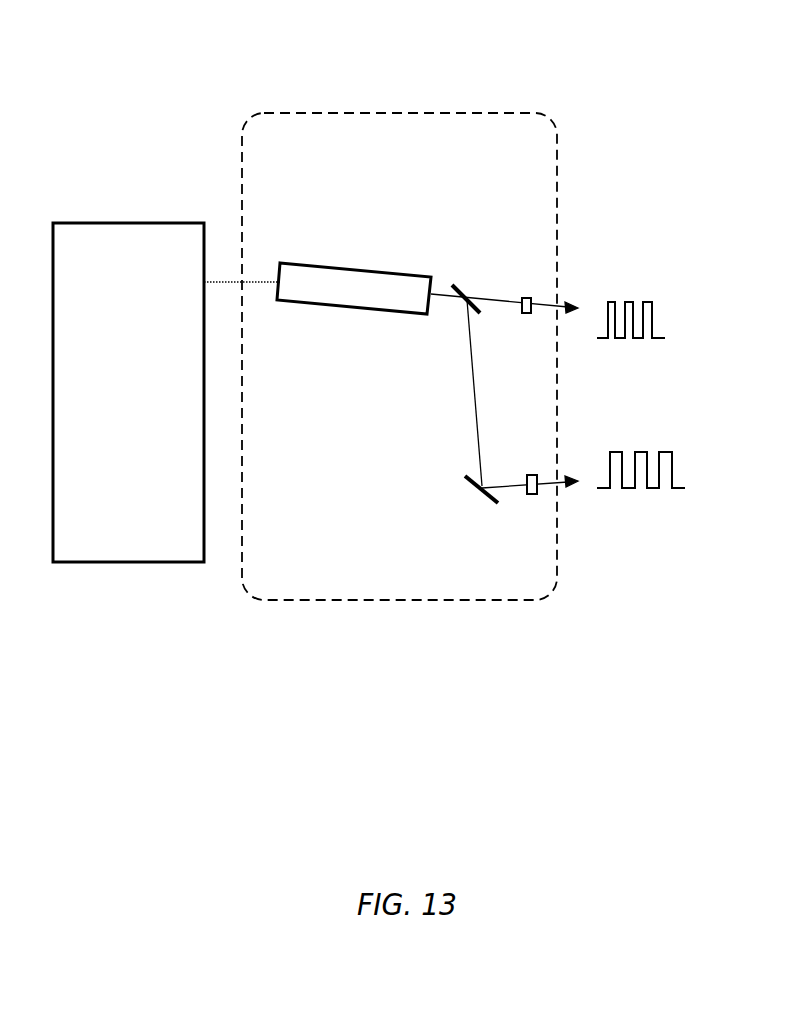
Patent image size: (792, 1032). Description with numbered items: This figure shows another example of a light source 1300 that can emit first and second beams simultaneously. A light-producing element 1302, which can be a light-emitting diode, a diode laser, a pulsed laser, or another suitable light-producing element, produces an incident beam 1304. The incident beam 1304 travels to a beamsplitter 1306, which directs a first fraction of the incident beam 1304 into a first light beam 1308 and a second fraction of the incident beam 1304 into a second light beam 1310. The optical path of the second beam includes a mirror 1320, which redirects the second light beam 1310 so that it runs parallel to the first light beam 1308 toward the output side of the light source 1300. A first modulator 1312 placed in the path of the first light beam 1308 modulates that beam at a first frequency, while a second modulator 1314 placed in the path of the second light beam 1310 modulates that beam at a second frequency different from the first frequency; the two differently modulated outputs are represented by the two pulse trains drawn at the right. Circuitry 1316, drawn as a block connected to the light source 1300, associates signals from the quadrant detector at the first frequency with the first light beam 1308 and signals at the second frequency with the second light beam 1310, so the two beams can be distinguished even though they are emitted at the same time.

The dual-frequency light source assembly 1300 is at (400, 112).
The light-producing element 1302 is at (357, 268).
The incident beam 1304 is at (437, 298).
The beamsplitter 1306 is at (454, 283).
The first light beam 1308 is at (508, 297).
The second light beam 1310 is at (513, 488).
The first modulator 1312 is at (526, 314).
The second modulator 1314 is at (528, 475).
The circuitry 1316 is at (130, 223).
The mirror 1320 is at (465, 476).